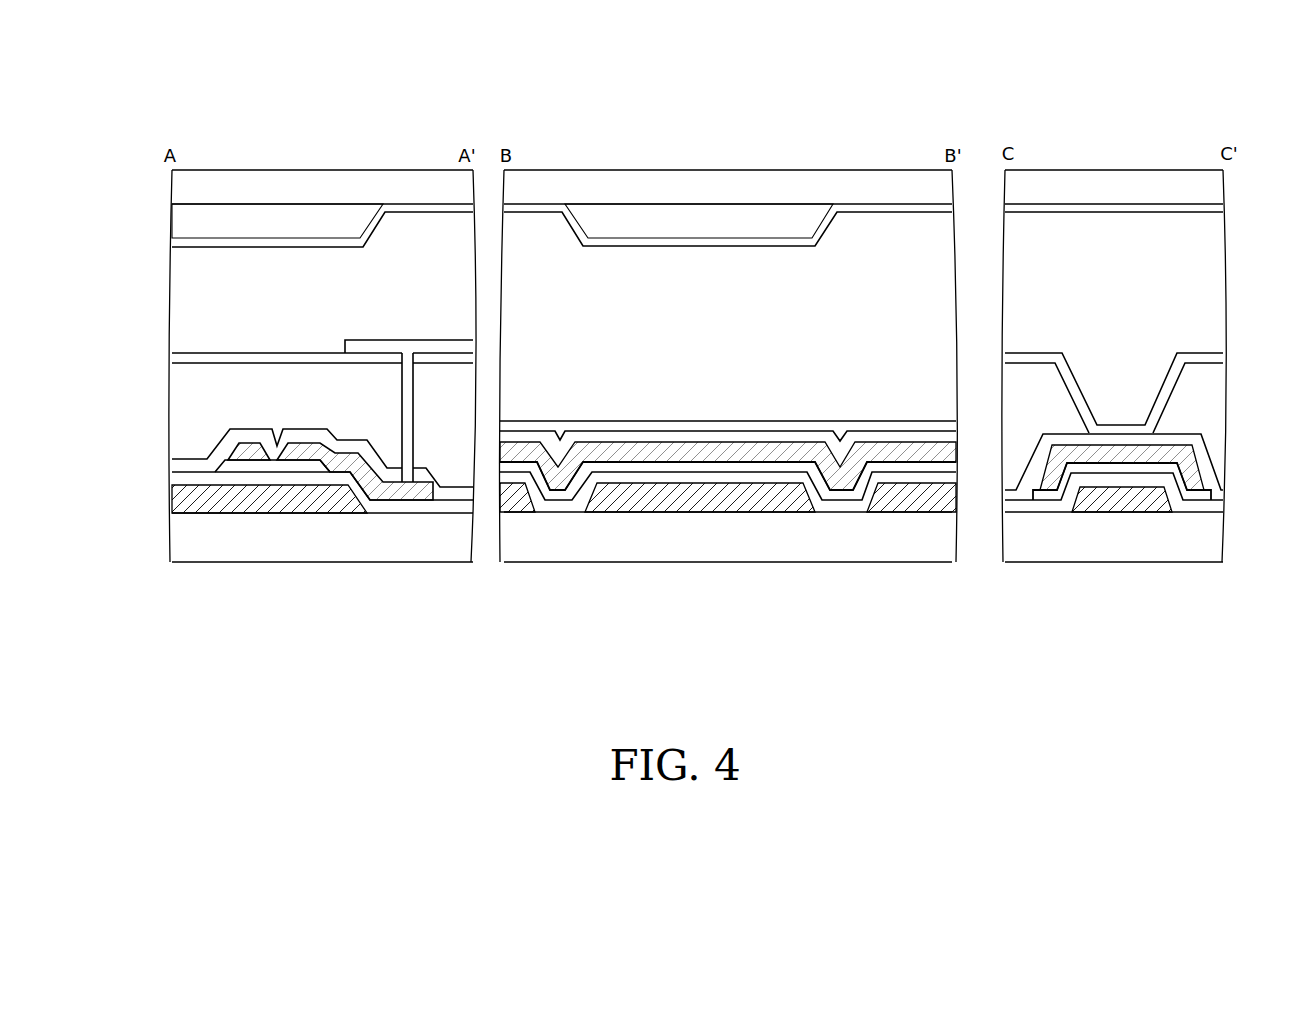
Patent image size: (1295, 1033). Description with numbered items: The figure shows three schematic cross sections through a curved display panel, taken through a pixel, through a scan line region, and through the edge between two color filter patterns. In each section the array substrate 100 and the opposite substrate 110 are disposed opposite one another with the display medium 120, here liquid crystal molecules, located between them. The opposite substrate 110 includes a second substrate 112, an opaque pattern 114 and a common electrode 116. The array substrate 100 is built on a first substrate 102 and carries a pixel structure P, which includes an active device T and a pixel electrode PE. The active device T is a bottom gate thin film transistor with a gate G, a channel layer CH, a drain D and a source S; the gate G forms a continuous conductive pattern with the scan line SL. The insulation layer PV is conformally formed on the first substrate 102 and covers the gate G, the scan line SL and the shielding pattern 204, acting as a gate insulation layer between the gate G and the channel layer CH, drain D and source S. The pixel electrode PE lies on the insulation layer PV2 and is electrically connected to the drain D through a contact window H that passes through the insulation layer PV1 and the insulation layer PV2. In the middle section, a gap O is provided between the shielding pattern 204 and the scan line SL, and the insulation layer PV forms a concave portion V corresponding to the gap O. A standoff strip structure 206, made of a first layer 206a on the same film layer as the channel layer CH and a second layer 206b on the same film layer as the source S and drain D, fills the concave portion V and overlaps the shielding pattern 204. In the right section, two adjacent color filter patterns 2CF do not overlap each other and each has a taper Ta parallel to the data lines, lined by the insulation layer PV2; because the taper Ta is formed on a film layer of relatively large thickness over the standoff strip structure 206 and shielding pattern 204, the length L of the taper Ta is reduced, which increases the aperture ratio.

The opposite substrate 110 is at (100, 172).
The second substrate 112 is at (185, 191).
The opaque pattern 114 is at (185, 217).
The common electrode 116 is at (185, 242).
The display medium 120 is at (185, 312).
The array substrate 100 is at (100, 353).
The first substrate 102 is at (187, 525).
The insulation layer PV2 is at (185, 358).
The color filter pattern 2CF is at (185, 400).
The insulation layer PV1 is at (185, 467).
The insulation layer PV is at (187, 480).
The contact window H is at (401, 410).
The pixel electrode PE is at (437, 347).
The source S is at (247, 455).
The gate G is at (263, 500).
The channel layer CH is at (280, 465).
The drain D is at (302, 455).
The active device T is at (327, 635).
The pixel structure P is at (382, 650).
The shielding pattern 204 is at (515, 498).
The gap O is at (530, 506).
The concave portion V is at (540, 495).
The scan line SL is at (723, 503).
The first layer 206a is at (847, 483).
The second layer 206b is at (876, 483).
The standoff strip structure 206 is at (840, 640).
The length of the taper L is at (1185, 433).
The taper Ta is at (1175, 389).